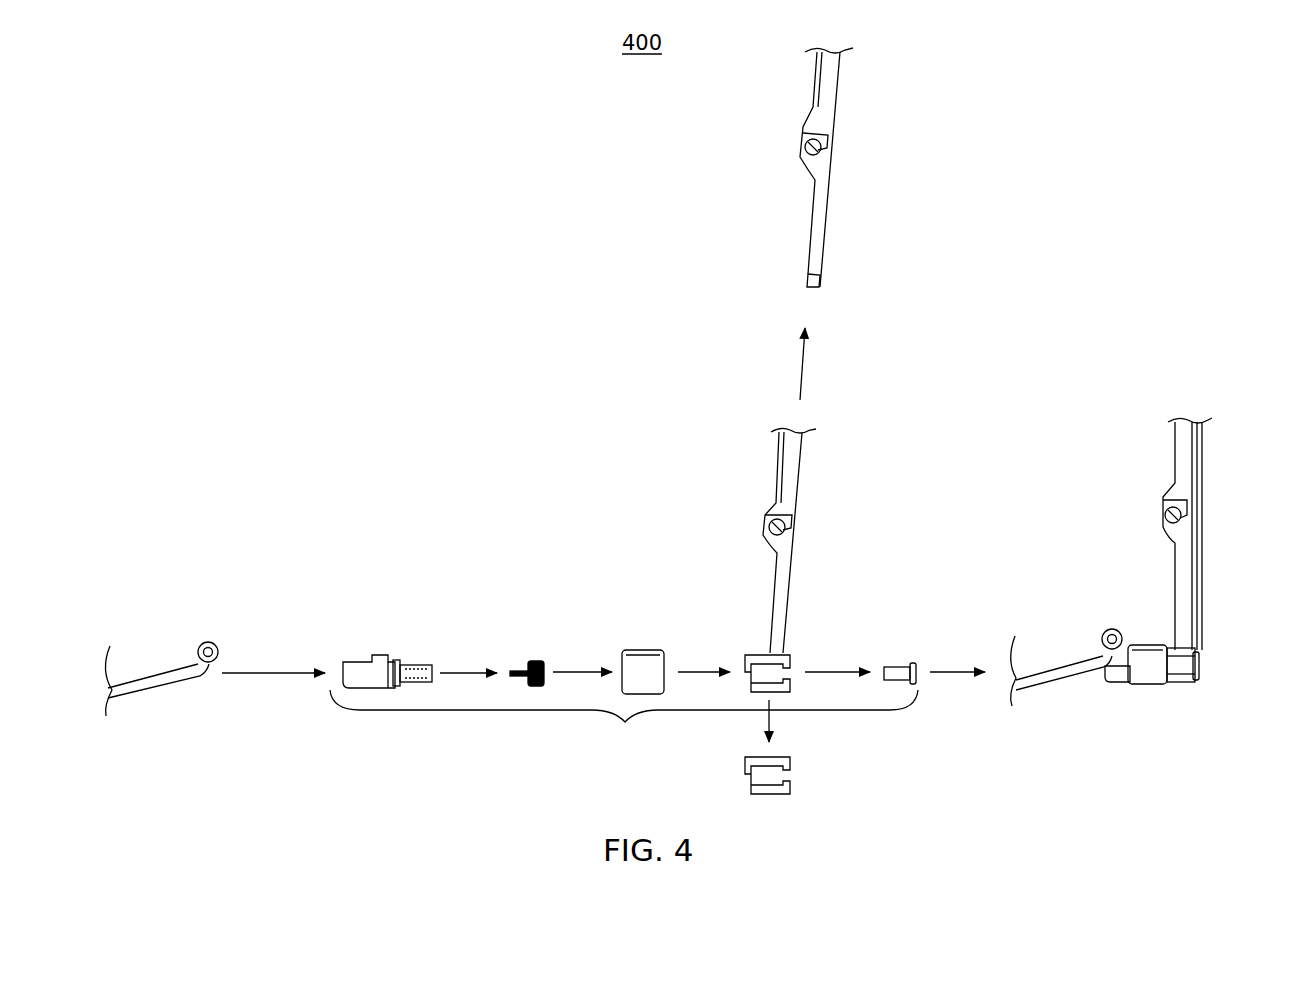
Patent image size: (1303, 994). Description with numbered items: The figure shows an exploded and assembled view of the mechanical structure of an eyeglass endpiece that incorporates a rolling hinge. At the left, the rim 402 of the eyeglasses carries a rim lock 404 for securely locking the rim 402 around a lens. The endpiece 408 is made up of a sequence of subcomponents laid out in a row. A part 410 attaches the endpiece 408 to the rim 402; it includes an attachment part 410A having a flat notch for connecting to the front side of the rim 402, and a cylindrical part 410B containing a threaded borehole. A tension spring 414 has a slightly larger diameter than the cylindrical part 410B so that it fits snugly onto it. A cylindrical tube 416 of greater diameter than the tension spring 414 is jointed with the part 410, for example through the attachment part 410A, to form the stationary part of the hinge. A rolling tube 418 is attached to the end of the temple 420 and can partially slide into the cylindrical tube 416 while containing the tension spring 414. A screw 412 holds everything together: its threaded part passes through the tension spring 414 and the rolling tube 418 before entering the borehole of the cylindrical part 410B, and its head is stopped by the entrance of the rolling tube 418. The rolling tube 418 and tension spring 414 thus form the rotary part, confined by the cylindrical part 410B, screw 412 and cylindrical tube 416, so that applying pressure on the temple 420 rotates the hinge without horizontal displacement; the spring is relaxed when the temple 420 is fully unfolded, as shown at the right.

The rim 402 is at (160, 678).
The rim lock 404 is at (206, 644).
The endpiece 408 is at (624, 720).
The part 410 is at (465, 578).
The attachment part 410A is at (376, 657).
The cylindrical part 410B is at (412, 663).
The screw 412 is at (905, 662).
The tension spring 414 is at (536, 660).
The cylindrical tube 416 is at (645, 650).
The rolling tube 418 is at (785, 656).
The temple 420 is at (824, 214).